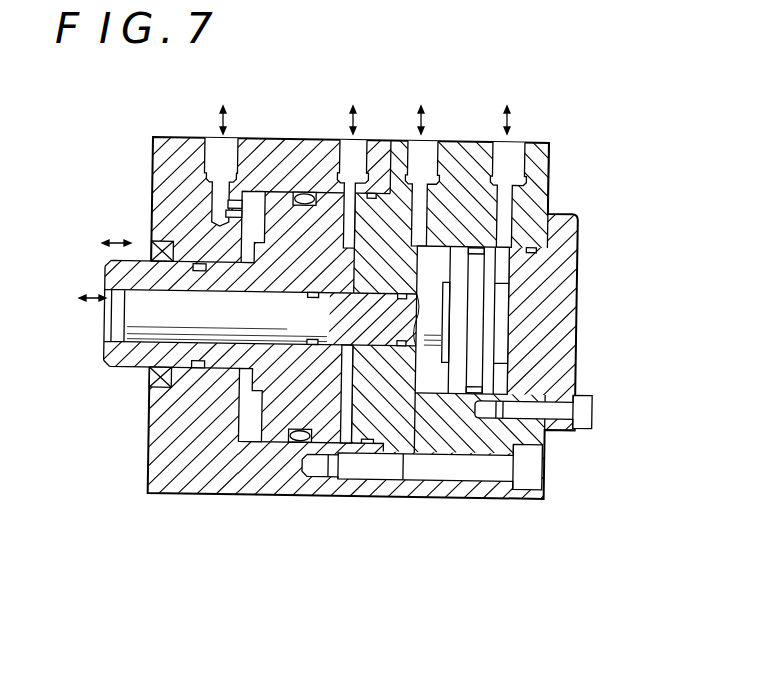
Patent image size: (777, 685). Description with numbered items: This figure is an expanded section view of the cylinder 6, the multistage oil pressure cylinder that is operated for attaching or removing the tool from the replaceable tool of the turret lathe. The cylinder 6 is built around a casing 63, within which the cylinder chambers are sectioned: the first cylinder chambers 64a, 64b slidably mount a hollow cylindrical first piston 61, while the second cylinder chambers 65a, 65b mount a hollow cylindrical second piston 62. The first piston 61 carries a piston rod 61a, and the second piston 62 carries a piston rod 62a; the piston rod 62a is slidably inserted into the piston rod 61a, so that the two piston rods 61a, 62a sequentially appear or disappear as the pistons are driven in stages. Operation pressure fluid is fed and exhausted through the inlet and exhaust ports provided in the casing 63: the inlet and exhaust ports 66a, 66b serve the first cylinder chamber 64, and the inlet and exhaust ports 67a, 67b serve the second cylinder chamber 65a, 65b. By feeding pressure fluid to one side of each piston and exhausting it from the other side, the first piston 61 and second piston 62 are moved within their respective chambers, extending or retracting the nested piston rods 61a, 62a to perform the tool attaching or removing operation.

The cylinder 6 is at (557, 141).
The first piston 61 is at (284, 200).
The piston rod of the first piston 61a is at (152, 400).
The second piston 62 is at (462, 327).
The piston rod of the second piston 62a is at (108, 368).
The casing 63 is at (316, 150).
The first cylinder chamber 64 is at (250, 238).
The first cylinder chamber 64a is at (247, 432).
The first cylinder chamber 64b is at (343, 425).
The second cylinder chamber 65a is at (432, 383).
The second cylinder chamber 65b is at (500, 383).
The inlet and exhaust port 66a is at (218, 150).
The inlet and exhaust port 66b is at (357, 150).
The inlet and exhaust port 67a is at (423, 155).
The inlet and exhaust port 67b is at (511, 155).